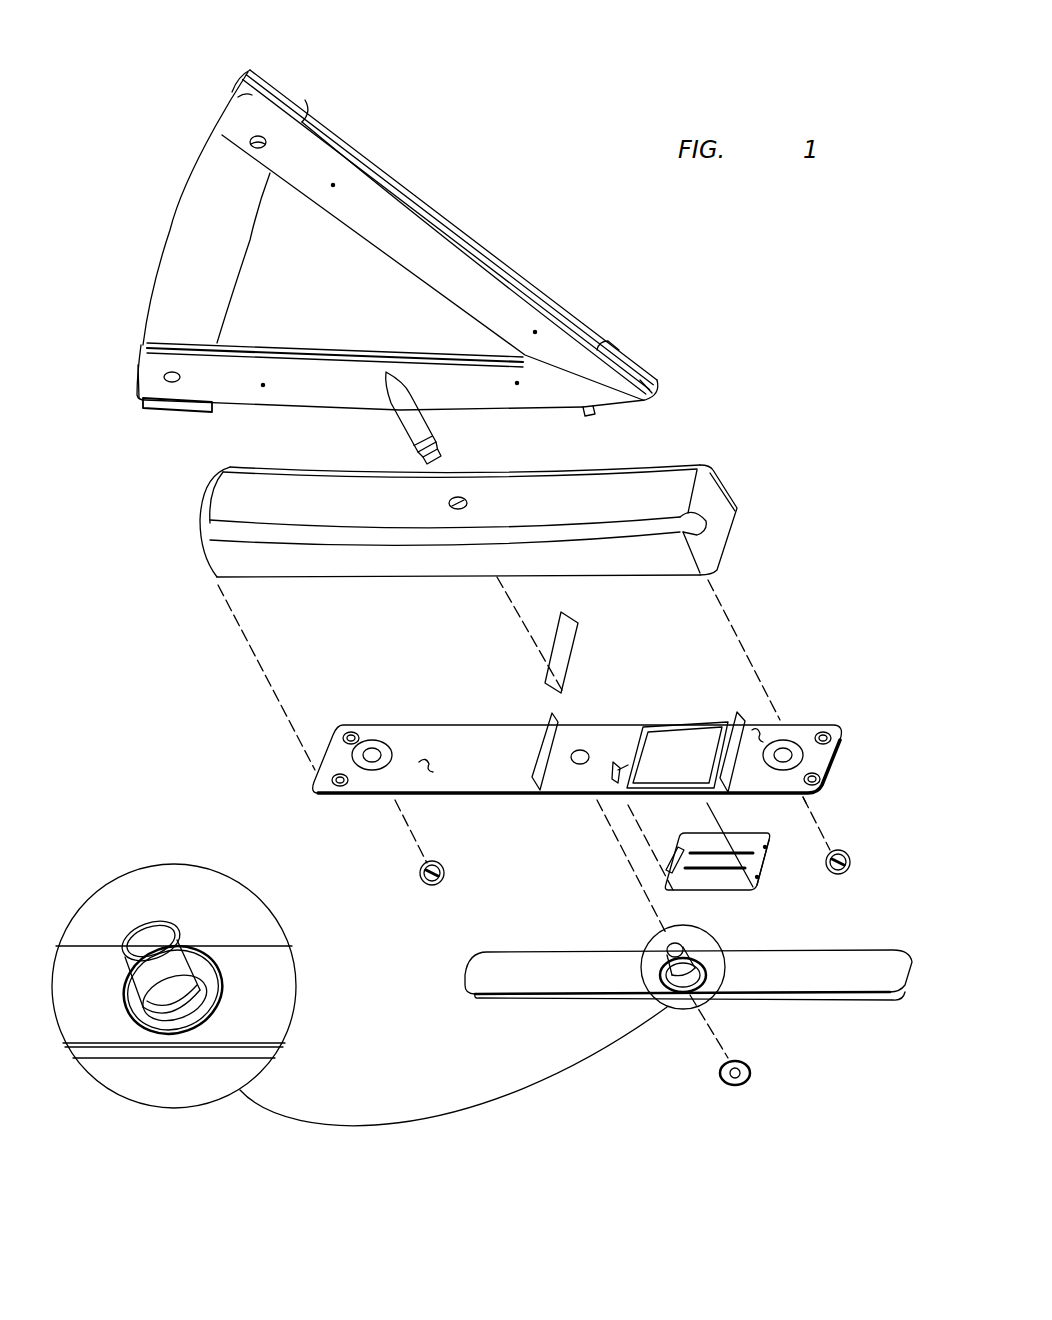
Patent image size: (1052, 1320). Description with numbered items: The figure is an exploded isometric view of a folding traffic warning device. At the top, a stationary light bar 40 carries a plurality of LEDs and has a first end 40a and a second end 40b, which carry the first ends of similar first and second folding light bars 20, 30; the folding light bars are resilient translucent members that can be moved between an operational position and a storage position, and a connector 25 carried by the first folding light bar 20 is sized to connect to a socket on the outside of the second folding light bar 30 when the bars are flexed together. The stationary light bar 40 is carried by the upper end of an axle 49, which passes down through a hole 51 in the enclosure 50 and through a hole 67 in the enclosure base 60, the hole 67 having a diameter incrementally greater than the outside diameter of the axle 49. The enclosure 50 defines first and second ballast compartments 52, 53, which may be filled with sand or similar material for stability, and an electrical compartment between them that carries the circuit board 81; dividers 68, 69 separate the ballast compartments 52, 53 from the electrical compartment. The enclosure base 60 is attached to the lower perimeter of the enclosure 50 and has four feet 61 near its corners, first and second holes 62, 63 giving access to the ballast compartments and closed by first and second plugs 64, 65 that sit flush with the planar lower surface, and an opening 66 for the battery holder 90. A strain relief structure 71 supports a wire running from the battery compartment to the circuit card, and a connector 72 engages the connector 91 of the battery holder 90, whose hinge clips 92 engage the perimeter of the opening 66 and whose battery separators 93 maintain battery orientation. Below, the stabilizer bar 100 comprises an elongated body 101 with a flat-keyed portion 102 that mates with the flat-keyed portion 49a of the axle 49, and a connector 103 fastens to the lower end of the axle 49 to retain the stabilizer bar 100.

The first folding light bar 20 is at (437, 208).
The connector 25 is at (265, 130).
The second folding light bar 30 is at (178, 197).
The stationary light bar 40 is at (385, 345).
The first end of the stationary light bar 40a is at (622, 352).
The second end of the stationary light bar 40b is at (140, 368).
The axle 49 is at (390, 432).
The flat-keyed portion of the axle 49a is at (445, 435).
The enclosure 50 is at (722, 517).
The hole 51 is at (448, 507).
The first ballast compartment 52 is at (415, 770).
The second ballast compartment 53 is at (757, 738).
The enclosure base 60 is at (822, 713).
The feet 61 is at (833, 738).
The first hole 62 is at (372, 755).
The second hole 63 is at (783, 755).
The first plug 64 is at (420, 876).
The second plug 65 is at (850, 864).
The opening 66 is at (688, 752).
The hole 67 is at (580, 764).
The divider 68 is at (545, 745).
The divider 69 is at (795, 810).
The strain relief structure 71 is at (614, 798).
The connector 72 is at (622, 768).
The circuit board 81 is at (548, 648).
The battery holder 90 is at (668, 890).
The connector 91 is at (667, 857).
The hinge clips 92 is at (757, 882).
The battery separators 93 is at (708, 862).
The stabilizer bar 100 is at (445, 990).
The elongated body 101 is at (672, 968).
The flat-keyed portion 102 is at (705, 952).
The connector 103 is at (753, 1068).